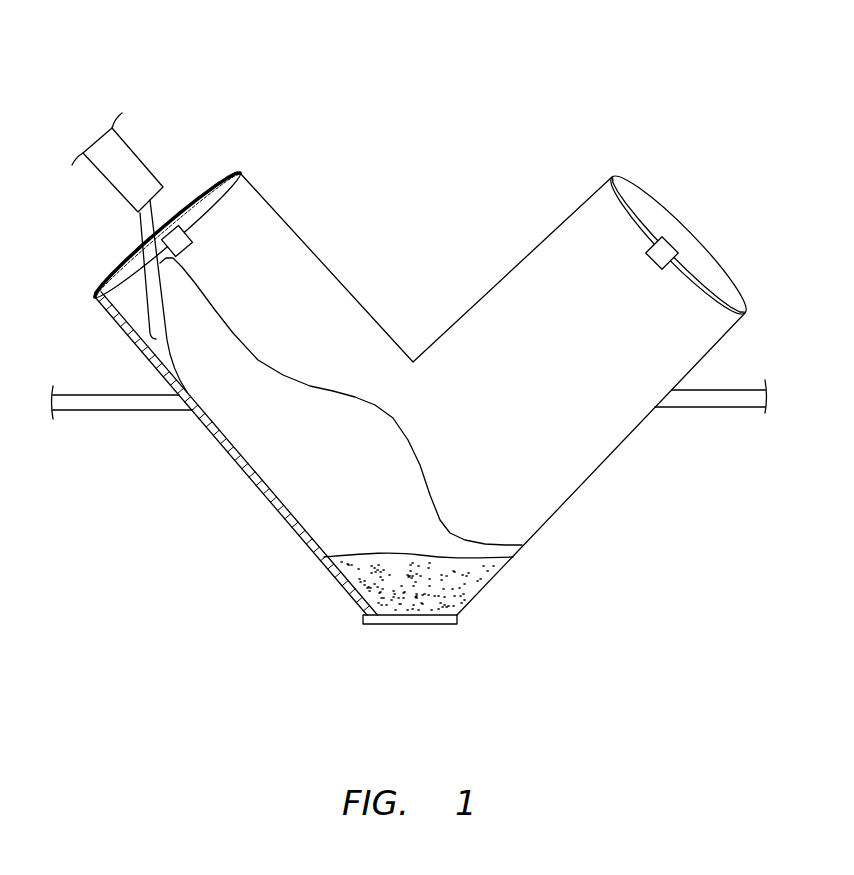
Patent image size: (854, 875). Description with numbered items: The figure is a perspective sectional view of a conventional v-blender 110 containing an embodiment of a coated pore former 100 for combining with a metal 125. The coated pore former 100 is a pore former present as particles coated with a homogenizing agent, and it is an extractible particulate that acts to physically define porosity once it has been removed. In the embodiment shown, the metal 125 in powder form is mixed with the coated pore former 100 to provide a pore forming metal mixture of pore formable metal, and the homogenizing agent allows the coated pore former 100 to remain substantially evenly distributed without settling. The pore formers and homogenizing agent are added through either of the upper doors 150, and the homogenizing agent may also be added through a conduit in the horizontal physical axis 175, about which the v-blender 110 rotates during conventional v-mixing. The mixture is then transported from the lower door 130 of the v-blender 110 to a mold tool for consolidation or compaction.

The v-blender 110 is at (684, 54).
The metal 125 is at (146, 217).
The upper doors 150 is at (708, 298).
The horizontal physical axis 175 is at (718, 402).
The coated pore former 100 is at (367, 577).
The lower door 130 is at (400, 619).